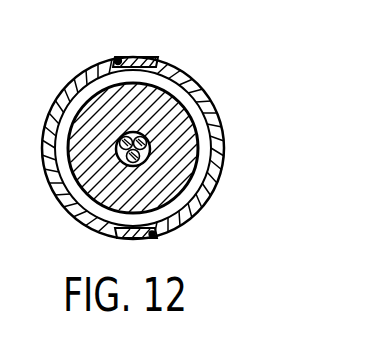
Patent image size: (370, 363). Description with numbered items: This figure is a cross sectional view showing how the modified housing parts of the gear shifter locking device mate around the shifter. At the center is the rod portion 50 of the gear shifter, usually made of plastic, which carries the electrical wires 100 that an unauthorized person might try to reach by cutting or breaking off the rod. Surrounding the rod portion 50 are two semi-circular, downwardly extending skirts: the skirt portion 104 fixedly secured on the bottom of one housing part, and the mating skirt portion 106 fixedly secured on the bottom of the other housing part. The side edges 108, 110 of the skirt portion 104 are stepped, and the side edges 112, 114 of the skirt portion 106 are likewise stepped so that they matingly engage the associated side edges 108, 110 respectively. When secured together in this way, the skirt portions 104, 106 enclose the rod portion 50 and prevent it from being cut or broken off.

The rod portion 50 is at (178, 150).
The electrical wires 100 is at (137, 158).
The skirt portion 104 is at (43, 171).
The skirt portion 106 is at (208, 120).
The side edge 108 is at (150, 234).
The side edge 110 is at (150, 63).
The side edge 112 is at (114, 229).
The side edge 114 is at (113, 58).